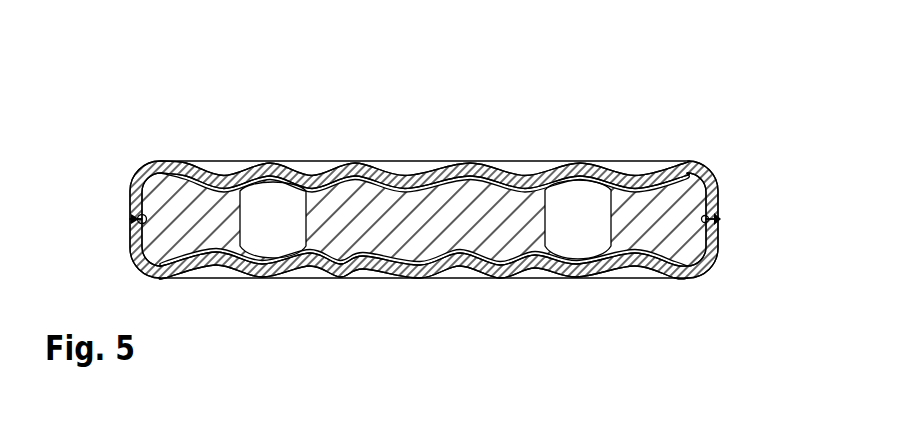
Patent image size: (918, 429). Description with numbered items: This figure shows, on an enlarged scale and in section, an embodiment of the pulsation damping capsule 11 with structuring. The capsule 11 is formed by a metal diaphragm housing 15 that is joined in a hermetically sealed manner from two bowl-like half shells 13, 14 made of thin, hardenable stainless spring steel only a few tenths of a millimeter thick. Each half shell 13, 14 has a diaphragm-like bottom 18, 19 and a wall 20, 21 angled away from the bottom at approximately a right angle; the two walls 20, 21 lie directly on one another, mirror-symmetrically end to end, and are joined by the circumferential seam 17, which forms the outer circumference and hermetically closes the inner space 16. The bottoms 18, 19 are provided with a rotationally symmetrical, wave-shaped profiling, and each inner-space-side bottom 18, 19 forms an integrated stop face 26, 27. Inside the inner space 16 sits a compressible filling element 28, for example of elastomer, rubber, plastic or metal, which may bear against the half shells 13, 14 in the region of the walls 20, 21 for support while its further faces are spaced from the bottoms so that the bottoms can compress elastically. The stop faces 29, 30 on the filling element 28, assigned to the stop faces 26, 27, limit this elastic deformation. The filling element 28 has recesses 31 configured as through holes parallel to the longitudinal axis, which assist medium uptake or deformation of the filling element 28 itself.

The pulsation damping capsule 11 is at (462, 205).
The half shell 13 is at (262, 160).
The half shell 14 is at (262, 282).
The metal diaphragm housing 15 is at (462, 205).
The inner space 16 is at (389, 186).
The circumferential seam 17 is at (722, 219).
The bottom 18 is at (493, 168).
The bottom 19 is at (495, 265).
The wall 20 is at (720, 188).
The wall 21 is at (720, 251).
The stop face 26 is at (427, 170).
The stop face 27 is at (425, 263).
The filling element 28 is at (668, 243).
The stop face 29 is at (350, 165).
The stop face 30 is at (350, 262).
The recess 31 is at (578, 243).